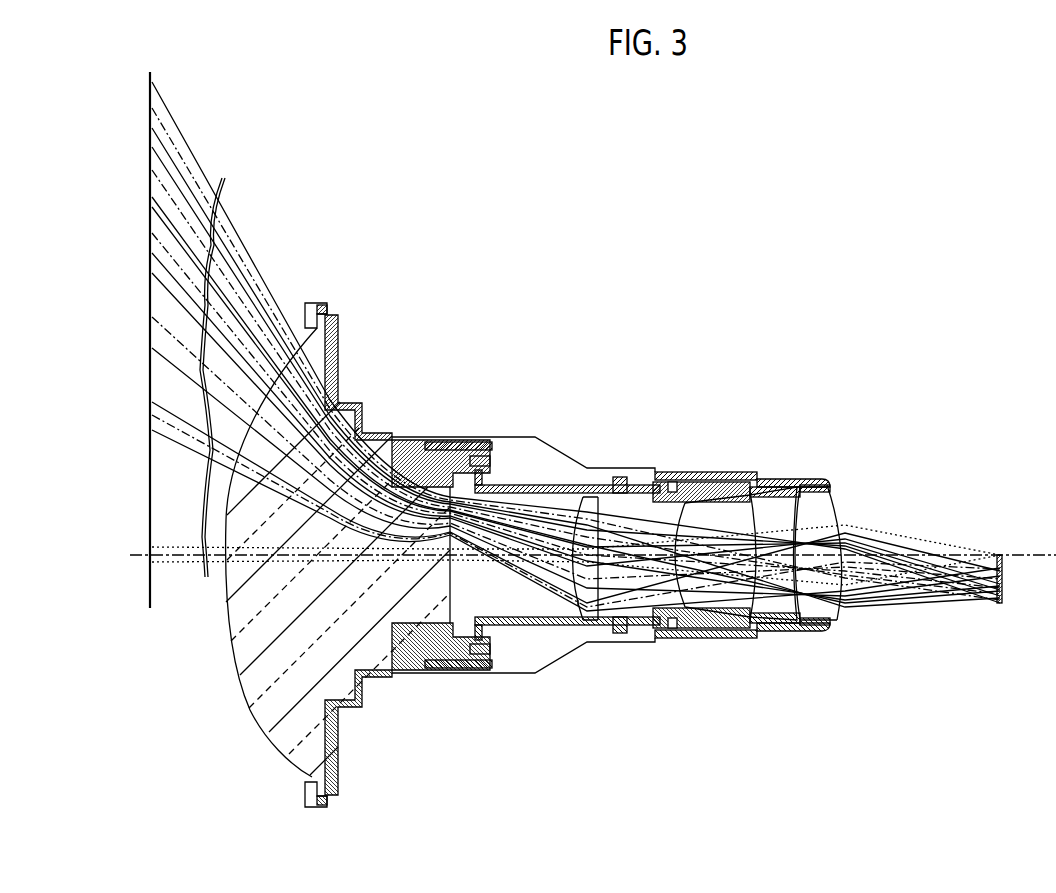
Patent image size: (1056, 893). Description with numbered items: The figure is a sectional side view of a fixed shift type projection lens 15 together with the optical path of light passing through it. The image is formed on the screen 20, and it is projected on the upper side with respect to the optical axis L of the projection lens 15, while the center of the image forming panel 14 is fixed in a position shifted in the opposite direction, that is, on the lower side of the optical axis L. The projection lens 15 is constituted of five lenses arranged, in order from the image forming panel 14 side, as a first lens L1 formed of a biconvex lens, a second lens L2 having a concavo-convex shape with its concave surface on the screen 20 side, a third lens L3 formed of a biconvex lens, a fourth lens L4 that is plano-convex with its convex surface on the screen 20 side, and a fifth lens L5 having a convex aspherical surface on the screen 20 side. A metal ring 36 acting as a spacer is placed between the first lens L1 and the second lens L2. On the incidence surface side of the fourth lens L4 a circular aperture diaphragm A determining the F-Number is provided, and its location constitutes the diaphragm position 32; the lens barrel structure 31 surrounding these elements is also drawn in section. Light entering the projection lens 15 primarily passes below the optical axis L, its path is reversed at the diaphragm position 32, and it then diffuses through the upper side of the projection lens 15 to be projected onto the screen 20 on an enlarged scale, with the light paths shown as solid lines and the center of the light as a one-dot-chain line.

The image forming panel 14 is at (1002, 581).
The projection lens 15 is at (644, 375).
The screen 20 is at (150, 470).
The lens barrel 31 is at (717, 468).
The diaphragm position 32 is at (580, 528).
The metal ring 36 is at (805, 483).
The aperture diaphragm A is at (578, 602).
The optical axis L is at (178, 556).
The first lens L1 is at (845, 622).
The second lens L2 is at (772, 626).
The third lens L3 is at (703, 628).
The fourth lens L4 is at (640, 626).
The fifth lens L5 is at (380, 647).